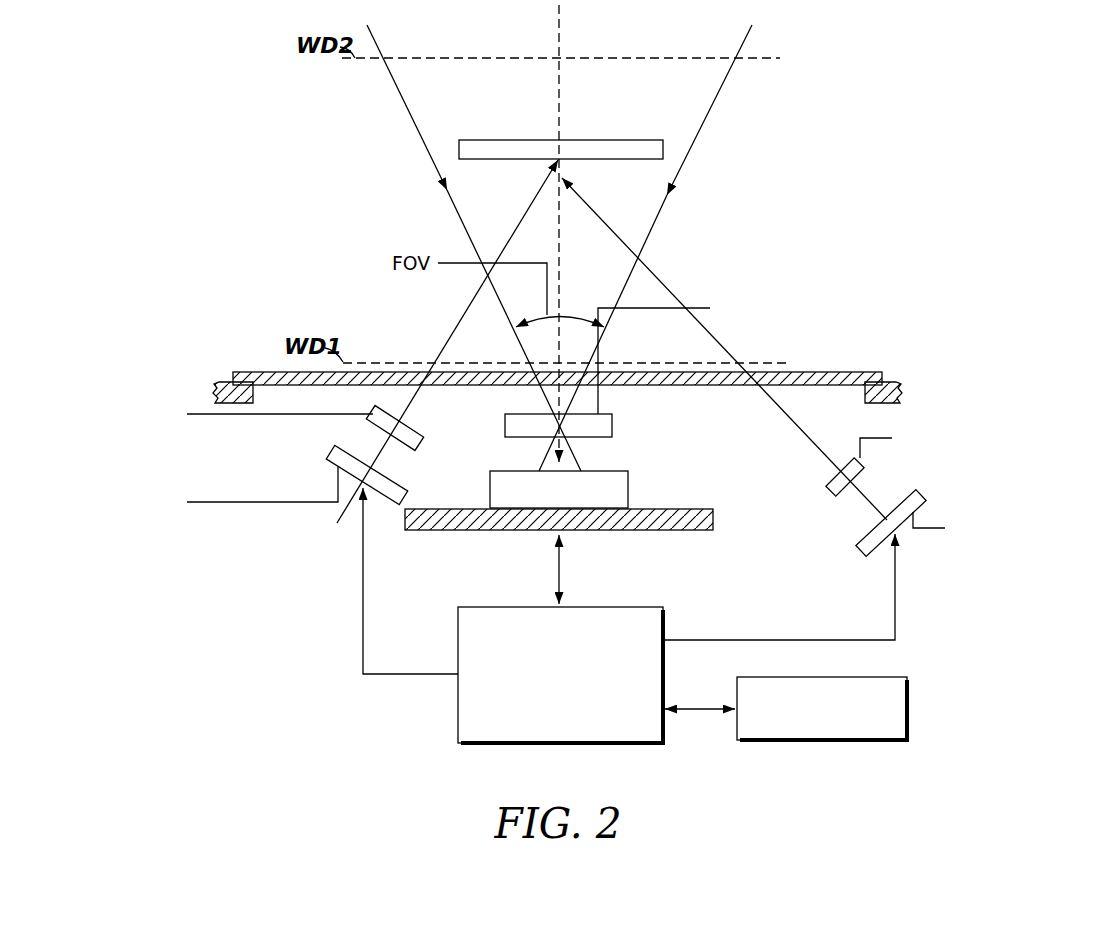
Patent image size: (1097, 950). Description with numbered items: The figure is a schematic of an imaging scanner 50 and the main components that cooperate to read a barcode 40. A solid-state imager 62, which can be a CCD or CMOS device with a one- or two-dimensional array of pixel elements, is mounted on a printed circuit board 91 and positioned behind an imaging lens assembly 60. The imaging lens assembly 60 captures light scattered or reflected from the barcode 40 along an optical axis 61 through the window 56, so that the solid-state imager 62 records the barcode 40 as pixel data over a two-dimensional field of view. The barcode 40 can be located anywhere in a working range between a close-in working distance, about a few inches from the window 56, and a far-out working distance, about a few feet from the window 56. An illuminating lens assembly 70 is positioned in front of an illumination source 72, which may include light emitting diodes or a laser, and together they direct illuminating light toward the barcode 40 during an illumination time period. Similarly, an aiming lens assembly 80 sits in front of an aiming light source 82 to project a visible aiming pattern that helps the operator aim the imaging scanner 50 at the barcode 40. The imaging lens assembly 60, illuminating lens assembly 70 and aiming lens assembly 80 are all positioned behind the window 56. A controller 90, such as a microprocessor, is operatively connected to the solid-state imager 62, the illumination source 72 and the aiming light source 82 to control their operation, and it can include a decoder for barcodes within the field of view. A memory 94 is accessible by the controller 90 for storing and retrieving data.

The barcode 40 is at (620, 140).
The imaging scanner 50 is at (728, 196).
The window 56 is at (247, 371).
The imaging lens assembly 60 is at (505, 426).
The optical axis 61 is at (560, 20).
The solid-state imager 62 is at (490, 491).
The illuminating lens assembly 70 is at (988, 415).
The illumination source 72 is at (1038, 556).
The aiming lens assembly 80 is at (87, 386).
The aiming light source 82 is at (100, 526).
The controller 90 is at (458, 638).
The printed circuit board 91 is at (655, 531).
The memory 94 is at (905, 677).